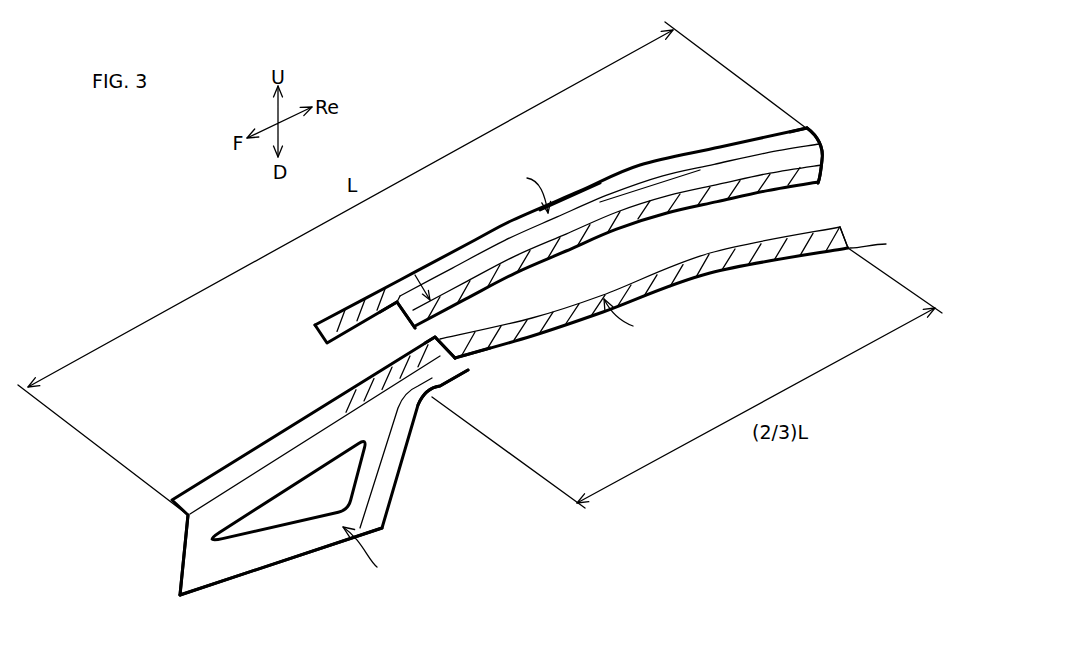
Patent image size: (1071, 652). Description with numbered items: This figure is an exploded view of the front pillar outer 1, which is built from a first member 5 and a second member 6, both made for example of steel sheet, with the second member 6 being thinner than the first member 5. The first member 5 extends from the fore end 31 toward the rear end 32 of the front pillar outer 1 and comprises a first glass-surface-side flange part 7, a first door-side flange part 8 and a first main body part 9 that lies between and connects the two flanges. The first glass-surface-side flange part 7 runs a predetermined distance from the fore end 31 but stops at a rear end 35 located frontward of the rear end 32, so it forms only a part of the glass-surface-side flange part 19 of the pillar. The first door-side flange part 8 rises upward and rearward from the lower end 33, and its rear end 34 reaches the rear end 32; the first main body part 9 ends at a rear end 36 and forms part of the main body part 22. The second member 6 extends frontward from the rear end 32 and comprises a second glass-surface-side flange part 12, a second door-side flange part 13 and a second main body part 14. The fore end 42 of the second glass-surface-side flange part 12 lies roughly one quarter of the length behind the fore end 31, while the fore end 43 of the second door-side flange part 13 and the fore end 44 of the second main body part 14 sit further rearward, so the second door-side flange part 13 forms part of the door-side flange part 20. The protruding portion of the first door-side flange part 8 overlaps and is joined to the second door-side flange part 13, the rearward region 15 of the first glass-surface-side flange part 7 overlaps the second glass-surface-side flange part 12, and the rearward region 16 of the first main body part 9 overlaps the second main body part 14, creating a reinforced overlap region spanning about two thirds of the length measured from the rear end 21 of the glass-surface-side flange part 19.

The front pillar outer 1 is at (219, 248).
The first member 5 is at (270, 543).
The second member 6 is at (574, 192).
The first glass-surface-side flange part 7 is at (255, 452).
The first door-side flange part 8 is at (532, 336).
The first main body part 9 is at (420, 408).
The second glass-surface-side flange part 12 is at (643, 173).
The second door-side flange part 13 is at (820, 180).
The second main body part 14 is at (703, 175).
The rearward region 15 is at (365, 392).
The rearward region 16 is at (443, 373).
The glass-surface-side flange part 19 is at (497, 351).
The door-side flange part 20 is at (664, 292).
The rear end of the glass-surface-side flange part 21 is at (806, 125).
The main body part 22 is at (551, 307).
The fore end 31 is at (186, 553).
The rear end 32 is at (824, 150).
The lower end 33 is at (320, 550).
The rear end of the first door-side flange part 34 is at (848, 233).
The rear end of the first glass-surface-side flange part 35 is at (440, 337).
The rear end of the first main body part 36 is at (500, 336).
The fore end of the second glass-surface-side flange part 42 is at (313, 331).
The fore end of the second door-side flange part 43 is at (414, 325).
The fore end of the second main body part 44 is at (400, 303).